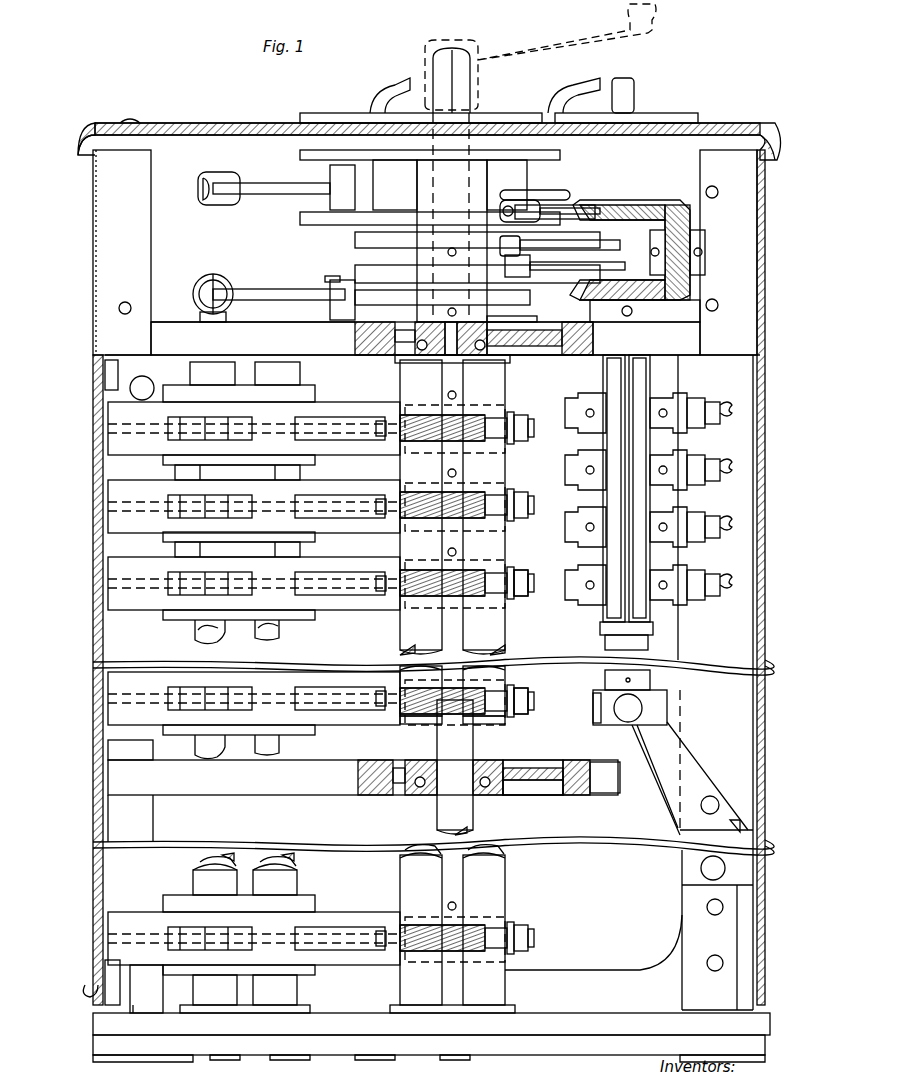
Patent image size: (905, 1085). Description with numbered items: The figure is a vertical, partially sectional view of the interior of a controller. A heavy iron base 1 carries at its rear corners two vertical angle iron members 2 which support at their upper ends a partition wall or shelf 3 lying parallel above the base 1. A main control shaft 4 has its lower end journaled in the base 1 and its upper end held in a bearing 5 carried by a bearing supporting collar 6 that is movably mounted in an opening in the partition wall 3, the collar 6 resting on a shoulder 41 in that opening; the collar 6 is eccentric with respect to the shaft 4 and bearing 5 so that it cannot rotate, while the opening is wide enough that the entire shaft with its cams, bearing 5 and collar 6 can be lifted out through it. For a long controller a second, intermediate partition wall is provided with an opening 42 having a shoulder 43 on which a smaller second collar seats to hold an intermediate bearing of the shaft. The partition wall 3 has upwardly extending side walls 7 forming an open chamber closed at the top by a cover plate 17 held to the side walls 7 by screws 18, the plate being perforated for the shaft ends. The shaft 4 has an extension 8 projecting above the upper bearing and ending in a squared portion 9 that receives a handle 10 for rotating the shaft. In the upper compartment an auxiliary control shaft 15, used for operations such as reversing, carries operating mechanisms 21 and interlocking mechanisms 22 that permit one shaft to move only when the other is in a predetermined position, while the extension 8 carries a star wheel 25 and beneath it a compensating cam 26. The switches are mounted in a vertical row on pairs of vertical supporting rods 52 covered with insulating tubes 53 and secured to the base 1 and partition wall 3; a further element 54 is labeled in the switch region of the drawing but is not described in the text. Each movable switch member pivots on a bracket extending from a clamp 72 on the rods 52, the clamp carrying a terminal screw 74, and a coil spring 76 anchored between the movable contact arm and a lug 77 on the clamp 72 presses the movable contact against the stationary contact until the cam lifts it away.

The base 1 is at (405, 1055).
The angle iron members 2 is at (762, 650).
The partition wall 3 is at (164, 330).
The main control shaft 4 is at (470, 637).
The bearing 5 is at (500, 350).
The bearing supporting collar 6 is at (548, 356).
The side walls 7 is at (92, 218).
The shaft extension 8 is at (460, 185).
The squared portion 9 is at (462, 73).
The handle 10 is at (648, 33).
The auxiliary control shaft 15 is at (640, 310).
The cover plate 17 is at (210, 124).
The screws 18 is at (138, 122).
The operating mechanisms 21 is at (690, 224).
The interlocking mechanisms 22 is at (570, 262).
The star wheel 25 is at (375, 160).
The compensating cam 26 is at (355, 290).
The shoulder 41 is at (575, 356).
The opening 42 is at (578, 762).
The shoulder 43 is at (556, 795).
The supporting rods 52 is at (420, 641).
The insulating tubes 53 is at (255, 625).
The contact finger 54 is at (228, 630).
The clamp 72 is at (460, 445).
The terminal screw 74 is at (528, 590).
The coil spring 76 is at (462, 510).
The lug 77 is at (505, 515).